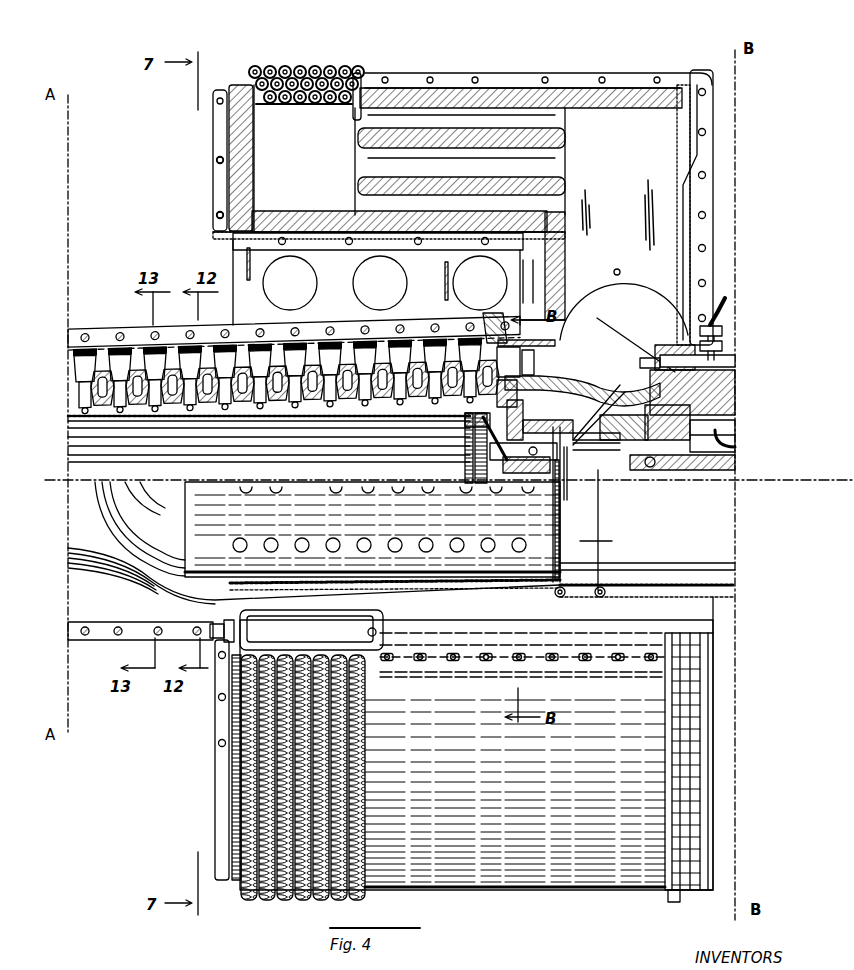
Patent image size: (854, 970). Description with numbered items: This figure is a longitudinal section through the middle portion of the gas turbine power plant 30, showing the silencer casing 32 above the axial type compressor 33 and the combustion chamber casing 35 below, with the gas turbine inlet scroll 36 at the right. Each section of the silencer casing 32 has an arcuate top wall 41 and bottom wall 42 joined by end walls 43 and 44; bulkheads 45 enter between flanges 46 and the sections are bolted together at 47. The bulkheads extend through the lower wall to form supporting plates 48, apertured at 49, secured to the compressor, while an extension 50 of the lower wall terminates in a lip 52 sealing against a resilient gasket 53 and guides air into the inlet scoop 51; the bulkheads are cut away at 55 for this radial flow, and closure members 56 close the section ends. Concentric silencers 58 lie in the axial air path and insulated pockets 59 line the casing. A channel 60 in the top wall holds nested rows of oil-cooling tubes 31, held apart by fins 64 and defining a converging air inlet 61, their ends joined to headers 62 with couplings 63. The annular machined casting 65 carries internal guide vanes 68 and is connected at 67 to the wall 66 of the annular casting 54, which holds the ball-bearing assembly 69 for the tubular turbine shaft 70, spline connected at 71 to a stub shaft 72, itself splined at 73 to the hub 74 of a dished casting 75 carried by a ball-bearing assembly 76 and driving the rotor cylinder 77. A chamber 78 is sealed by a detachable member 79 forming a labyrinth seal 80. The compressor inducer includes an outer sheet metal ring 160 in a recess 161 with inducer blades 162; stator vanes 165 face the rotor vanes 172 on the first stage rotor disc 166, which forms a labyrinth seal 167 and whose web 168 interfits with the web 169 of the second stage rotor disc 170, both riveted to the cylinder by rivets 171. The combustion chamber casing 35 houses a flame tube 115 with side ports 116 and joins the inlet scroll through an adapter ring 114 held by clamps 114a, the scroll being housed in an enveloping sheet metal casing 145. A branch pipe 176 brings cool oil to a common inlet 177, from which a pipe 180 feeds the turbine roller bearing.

The gas turbine power plant 30 is at (183, 235).
The finned oil-cooling tubes 31 is at (340, 68).
The silencer casing 32 is at (522, 76).
The axial type compressor 33 is at (104, 336).
The combustion chamber casing 35 is at (428, 590).
The gas turbine inlet scroll 36 is at (675, 583).
The top wall 41 is at (586, 76).
The bottom wall 42 is at (300, 278).
The end wall 43 is at (257, 182).
The end wall 44 is at (680, 163).
The bulkheads 45 is at (623, 216).
The flanges 46 is at (214, 140).
The bolts 47 is at (215, 213).
The supporting plates 48 is at (233, 256).
The apertures 49 is at (460, 280).
The extension 50 is at (540, 280).
The inlet scoop 51 is at (610, 354).
The lip 52 is at (500, 320).
The resilient gasket 53 is at (495, 318).
The annular casting 54 is at (660, 370).
The cut away 55 is at (620, 268).
The closure members 56 is at (598, 660).
The concentric silencers 58 is at (556, 185).
The hollow metal pockets 59 is at (245, 155).
The opening or channel 60 is at (362, 78).
The air inlet 61 is at (271, 52).
The headers 62 is at (288, 628).
The couplings 63 is at (205, 636).
The fins 64 is at (300, 62).
The annular machined casting 65 is at (614, 396).
The wall 66 is at (702, 425).
The connection 67 is at (650, 405).
The guide vanes 68 is at (534, 362).
The ball-bearing assembly 69 is at (650, 470).
The tubular turbine shaft 70 is at (735, 472).
The spline connection 71 is at (672, 480).
The stub shaft 72 is at (610, 480).
The spline connection 73 is at (540, 480).
The hub 74 is at (505, 480).
The dished casting 75 is at (478, 445).
The ball-bearing assembly 76 is at (560, 478).
The rotor cylinder 77 is at (370, 450).
The chamber 78 is at (592, 405).
The detachable member 79 is at (524, 412).
The labyrinth seal 80 is at (540, 430).
The adapter ring 114 is at (611, 538).
The clamps 114a is at (570, 594).
The flame tube 115 is at (190, 530).
The side ports 116 is at (300, 543).
The enveloping sheet metal casing 145 is at (735, 598).
The outer sheet metal ring 160 is at (540, 350).
The recess 161 is at (498, 350).
The inducer blades 162 is at (538, 372).
The stator vanes 165 is at (400, 352).
The first stage rotor disc 166 is at (470, 430).
The labyrinth seal 167 is at (520, 403).
The annular web 168 is at (468, 420).
The annular web 169 is at (450, 418).
The second stage rotor disc 170 is at (385, 412).
The rivets 171 is at (190, 415).
The rotor vanes 172 is at (177, 358).
The branch pipe 176 is at (737, 325).
The common inlet 177 is at (737, 355).
The pipe 180 is at (735, 447).